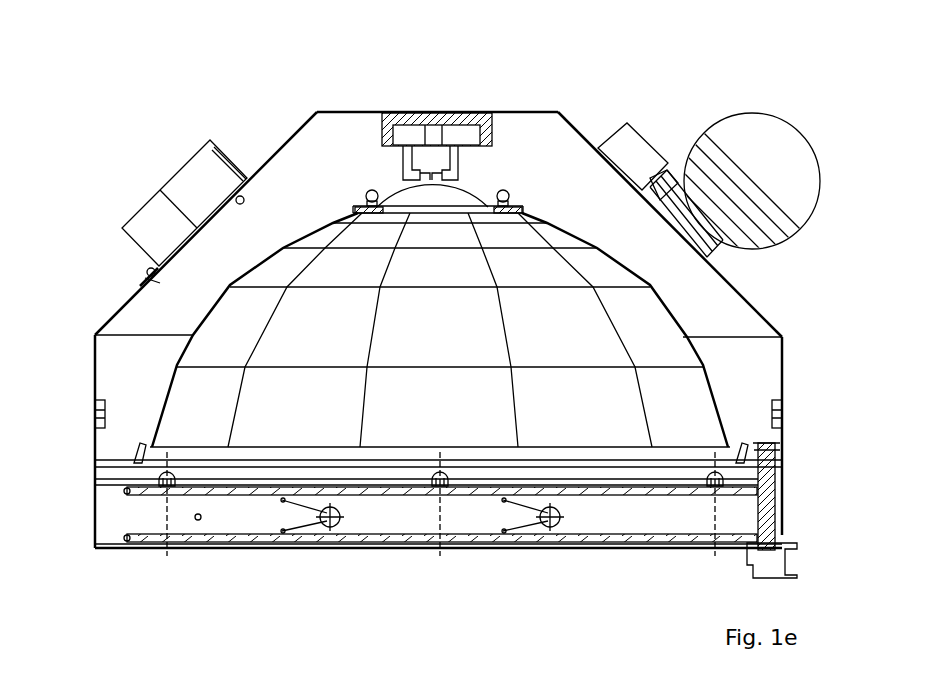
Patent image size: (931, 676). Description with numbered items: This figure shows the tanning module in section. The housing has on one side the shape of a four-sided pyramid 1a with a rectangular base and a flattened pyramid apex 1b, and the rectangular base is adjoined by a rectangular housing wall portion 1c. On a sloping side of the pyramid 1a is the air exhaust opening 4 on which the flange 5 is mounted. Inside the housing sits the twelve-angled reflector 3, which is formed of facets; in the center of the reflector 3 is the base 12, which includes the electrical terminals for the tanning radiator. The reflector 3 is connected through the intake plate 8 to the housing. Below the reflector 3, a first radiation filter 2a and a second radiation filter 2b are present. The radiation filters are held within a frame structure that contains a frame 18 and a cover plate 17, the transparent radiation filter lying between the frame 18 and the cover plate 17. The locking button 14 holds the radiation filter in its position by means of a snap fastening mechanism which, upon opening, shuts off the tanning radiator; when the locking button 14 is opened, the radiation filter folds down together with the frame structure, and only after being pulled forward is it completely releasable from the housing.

The four-sided pyramid 1a is at (758, 310).
The flattened pyramid apex 1b is at (342, 112).
The rectangular housing wall portion 1c is at (783, 370).
The reflector 3 is at (203, 320).
The air exhaust opening 4 is at (165, 188).
The flange 5 is at (227, 157).
The base 12 is at (448, 120).
The intake plate 8 is at (377, 465).
The first radiation filter 2a is at (253, 537).
The second radiation filter 2b is at (417, 490).
The frame 18 is at (135, 548).
The cover plate 17 is at (223, 480).
The locking button 14 is at (747, 568).